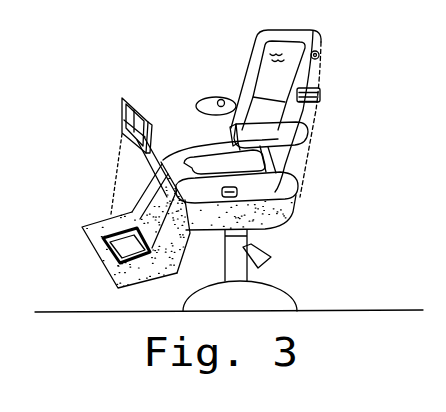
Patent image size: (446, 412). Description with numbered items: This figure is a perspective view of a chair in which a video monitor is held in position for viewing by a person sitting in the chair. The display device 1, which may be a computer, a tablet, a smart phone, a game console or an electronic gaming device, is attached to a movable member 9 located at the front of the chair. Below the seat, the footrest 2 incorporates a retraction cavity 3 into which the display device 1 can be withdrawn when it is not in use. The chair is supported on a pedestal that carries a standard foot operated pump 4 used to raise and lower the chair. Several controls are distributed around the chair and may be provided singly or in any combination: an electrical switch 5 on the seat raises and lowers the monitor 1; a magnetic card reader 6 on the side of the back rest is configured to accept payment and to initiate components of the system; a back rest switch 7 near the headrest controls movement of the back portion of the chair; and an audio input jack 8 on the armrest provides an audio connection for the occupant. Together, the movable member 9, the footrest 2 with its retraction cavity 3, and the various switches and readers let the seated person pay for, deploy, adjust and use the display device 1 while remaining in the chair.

The display device 1 is at (123, 97).
The footrest 2 is at (130, 277).
The retraction cavity 3 is at (152, 255).
The foot operated pump 4 is at (271, 258).
The electrical switch 5 is at (237, 192).
The magnetic card reader 6 is at (322, 95).
The back rest switch 7 is at (320, 53).
The audio input jack 8 is at (223, 99).
The movable member 9 is at (155, 165).